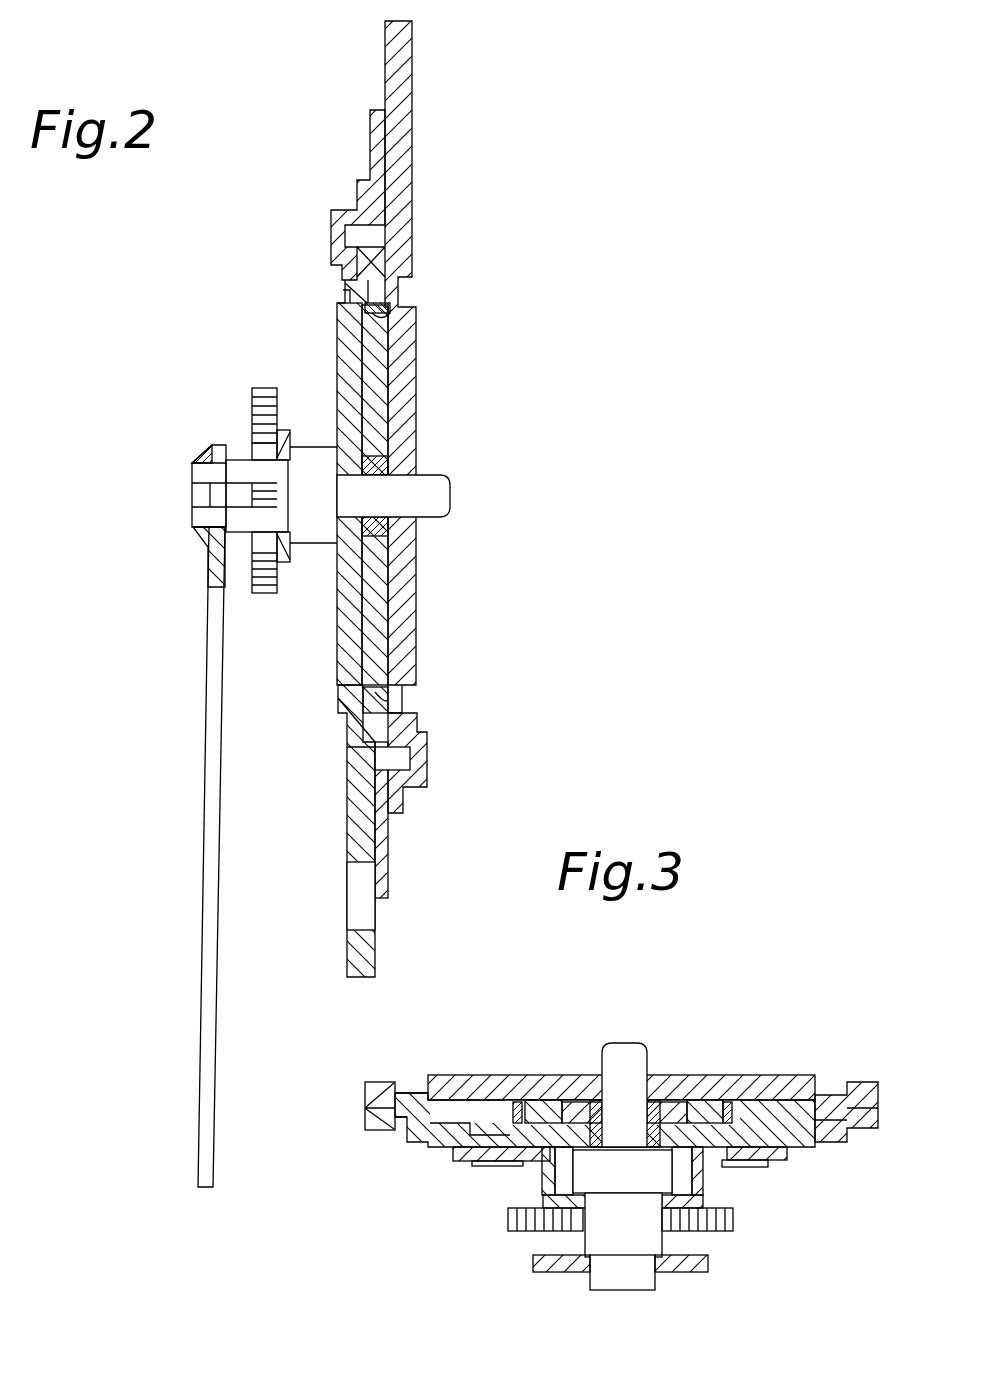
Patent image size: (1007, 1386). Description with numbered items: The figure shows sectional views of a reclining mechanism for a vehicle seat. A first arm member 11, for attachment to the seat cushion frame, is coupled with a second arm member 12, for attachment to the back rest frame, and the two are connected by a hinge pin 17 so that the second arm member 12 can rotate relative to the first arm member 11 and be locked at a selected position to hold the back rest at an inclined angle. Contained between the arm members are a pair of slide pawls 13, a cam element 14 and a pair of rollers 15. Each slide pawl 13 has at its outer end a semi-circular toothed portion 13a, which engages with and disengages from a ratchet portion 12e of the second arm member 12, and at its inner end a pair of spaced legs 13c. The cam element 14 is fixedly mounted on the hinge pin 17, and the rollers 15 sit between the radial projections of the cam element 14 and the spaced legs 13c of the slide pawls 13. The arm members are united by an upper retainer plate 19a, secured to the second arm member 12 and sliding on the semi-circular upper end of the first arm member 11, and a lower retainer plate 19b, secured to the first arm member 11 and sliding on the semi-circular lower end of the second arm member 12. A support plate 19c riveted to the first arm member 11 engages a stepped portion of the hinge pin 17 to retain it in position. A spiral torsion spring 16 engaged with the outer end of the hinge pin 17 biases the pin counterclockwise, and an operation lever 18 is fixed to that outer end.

In FIG. 2, the first arm member 11 is at (349, 848).
In FIG. 3, the first arm member 11 is at (405, 1146).
In FIG. 2, the second arm member 12 is at (414, 84).
In FIG. 3, the second arm member 12 is at (370, 1080).
In FIG. 2, the ratchet portion 12e is at (392, 316).
In FIG. 2, the slide pawl 13 is at (366, 367).
In FIG. 2, the semi-circular toothed portion 13a is at (390, 698).
In FIG. 3, the spaced legs 13c is at (510, 1100).
In FIG. 2, the cam element 14 is at (388, 473).
In FIG. 3, the cam element 14 is at (670, 1100).
In FIG. 3, the roller 15 is at (533, 1100).
In FIG. 2, the spiral torsion spring 16 is at (268, 588).
In FIG. 3, the spiral torsion spring 16 is at (722, 1235).
In FIG. 2, the hinge pin 17 is at (437, 500).
In FIG. 3, the hinge pin 17 is at (618, 1052).
In FIG. 2, the operation lever 18 is at (208, 803).
In FIG. 3, the operation lever 18 is at (572, 1274).
In FIG. 2, the upper retainer plate 19a is at (374, 153).
In FIG. 2, the lower retainer plate 19b is at (397, 805).
In FIG. 2, the support plate 19c is at (252, 442).
In FIG. 3, the support plate 19c is at (545, 1205).